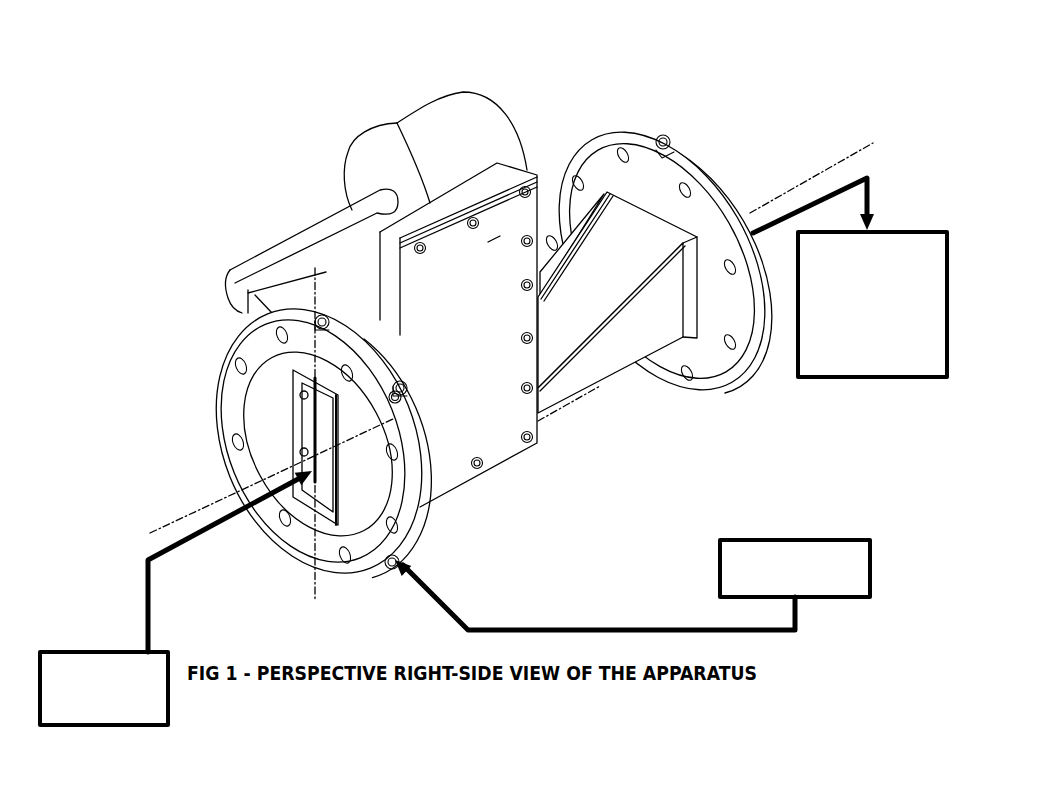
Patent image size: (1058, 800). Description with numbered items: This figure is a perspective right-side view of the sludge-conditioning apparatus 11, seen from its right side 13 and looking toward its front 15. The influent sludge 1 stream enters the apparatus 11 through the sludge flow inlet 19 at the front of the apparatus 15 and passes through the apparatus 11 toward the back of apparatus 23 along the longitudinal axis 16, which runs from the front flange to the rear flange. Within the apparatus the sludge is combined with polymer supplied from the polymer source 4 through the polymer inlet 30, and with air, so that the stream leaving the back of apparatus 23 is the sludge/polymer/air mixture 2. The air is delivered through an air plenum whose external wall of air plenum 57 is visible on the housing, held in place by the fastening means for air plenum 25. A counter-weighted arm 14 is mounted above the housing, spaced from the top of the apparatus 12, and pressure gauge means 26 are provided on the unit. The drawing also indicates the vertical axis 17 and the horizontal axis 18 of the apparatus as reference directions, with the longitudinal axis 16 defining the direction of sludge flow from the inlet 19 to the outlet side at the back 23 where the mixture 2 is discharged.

The sludge 1 is at (80, 652).
The sludge/polymer/air mixture 2 is at (930, 232).
The polymer source 4 is at (813, 597).
The apparatus 11 is at (678, 143).
The top of the apparatus 12 is at (347, 208).
The right side of the apparatus 13 is at (508, 413).
The counter-weighted arm 14 is at (397, 123).
The front of the apparatus 15 is at (245, 352).
The longitudinal axis 16 is at (163, 527).
The vertical axis 17 is at (300, 278).
The horizontal axis 18 is at (228, 373).
The sludge flow inlet 19 is at (355, 545).
The back of apparatus 23 is at (757, 357).
The fastening means for air plenum 25 is at (540, 207).
The pressure gauge means 26 is at (398, 388).
The polymer inlet 30 is at (290, 332).
The external wall of air plenum 57 is at (488, 242).